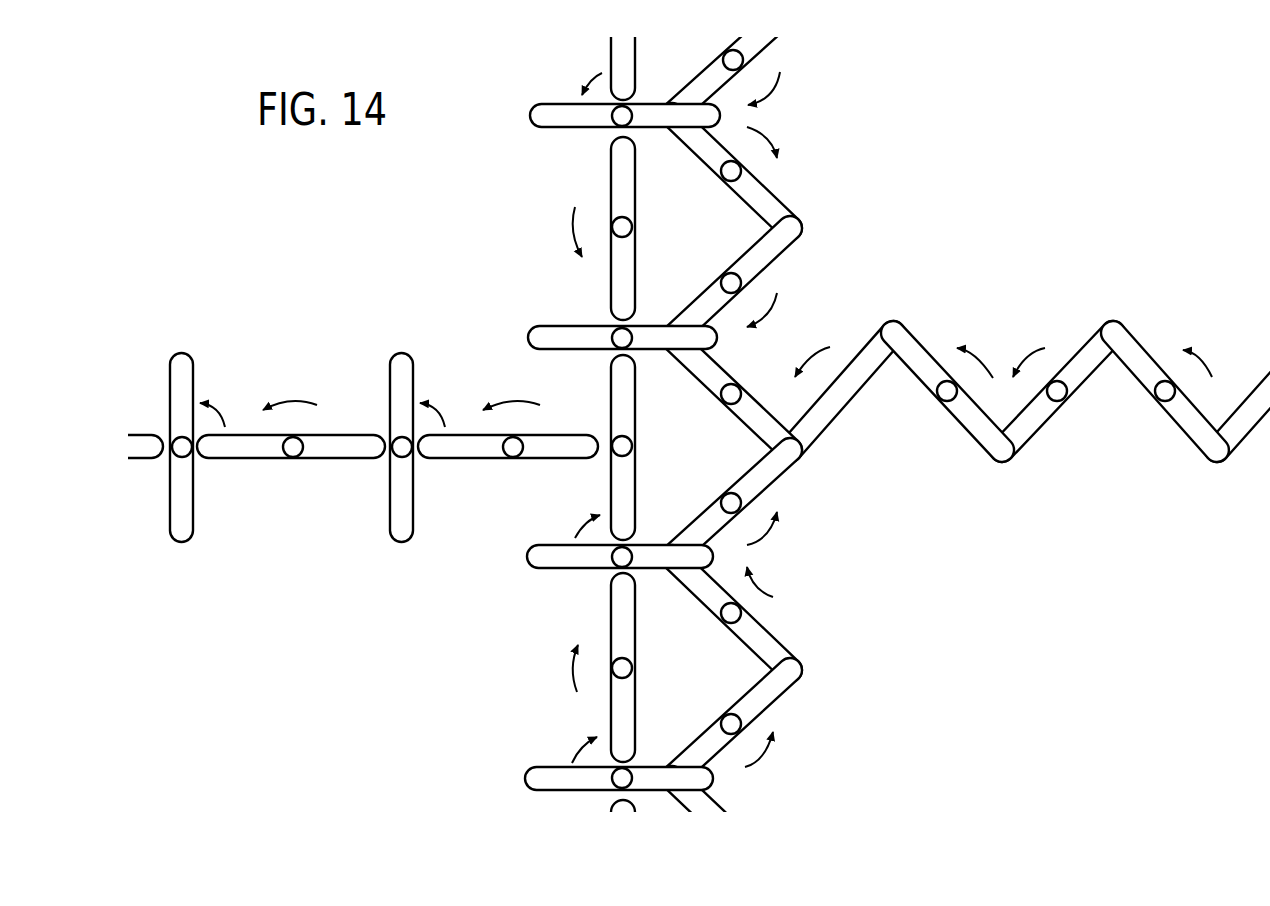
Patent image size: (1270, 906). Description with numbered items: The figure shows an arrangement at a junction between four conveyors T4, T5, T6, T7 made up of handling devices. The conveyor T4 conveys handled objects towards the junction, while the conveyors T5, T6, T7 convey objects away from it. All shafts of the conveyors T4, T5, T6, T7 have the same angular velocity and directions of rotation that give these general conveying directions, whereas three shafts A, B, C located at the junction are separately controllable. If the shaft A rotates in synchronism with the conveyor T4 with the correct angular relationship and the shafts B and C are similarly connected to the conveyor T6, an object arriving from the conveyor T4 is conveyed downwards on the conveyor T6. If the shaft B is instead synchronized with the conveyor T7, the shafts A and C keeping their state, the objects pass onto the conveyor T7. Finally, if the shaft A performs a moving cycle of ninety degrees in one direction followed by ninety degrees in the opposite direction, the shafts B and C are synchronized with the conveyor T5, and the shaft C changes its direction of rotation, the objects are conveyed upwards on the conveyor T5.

The conveyor T4 is at (1021, 376).
The conveyor T5 is at (678, 177).
The conveyor T6 is at (678, 723).
The conveyor T7 is at (349, 417).
The shaft A is at (728, 385).
The shaft B is at (610, 452).
The shaft C is at (612, 330).